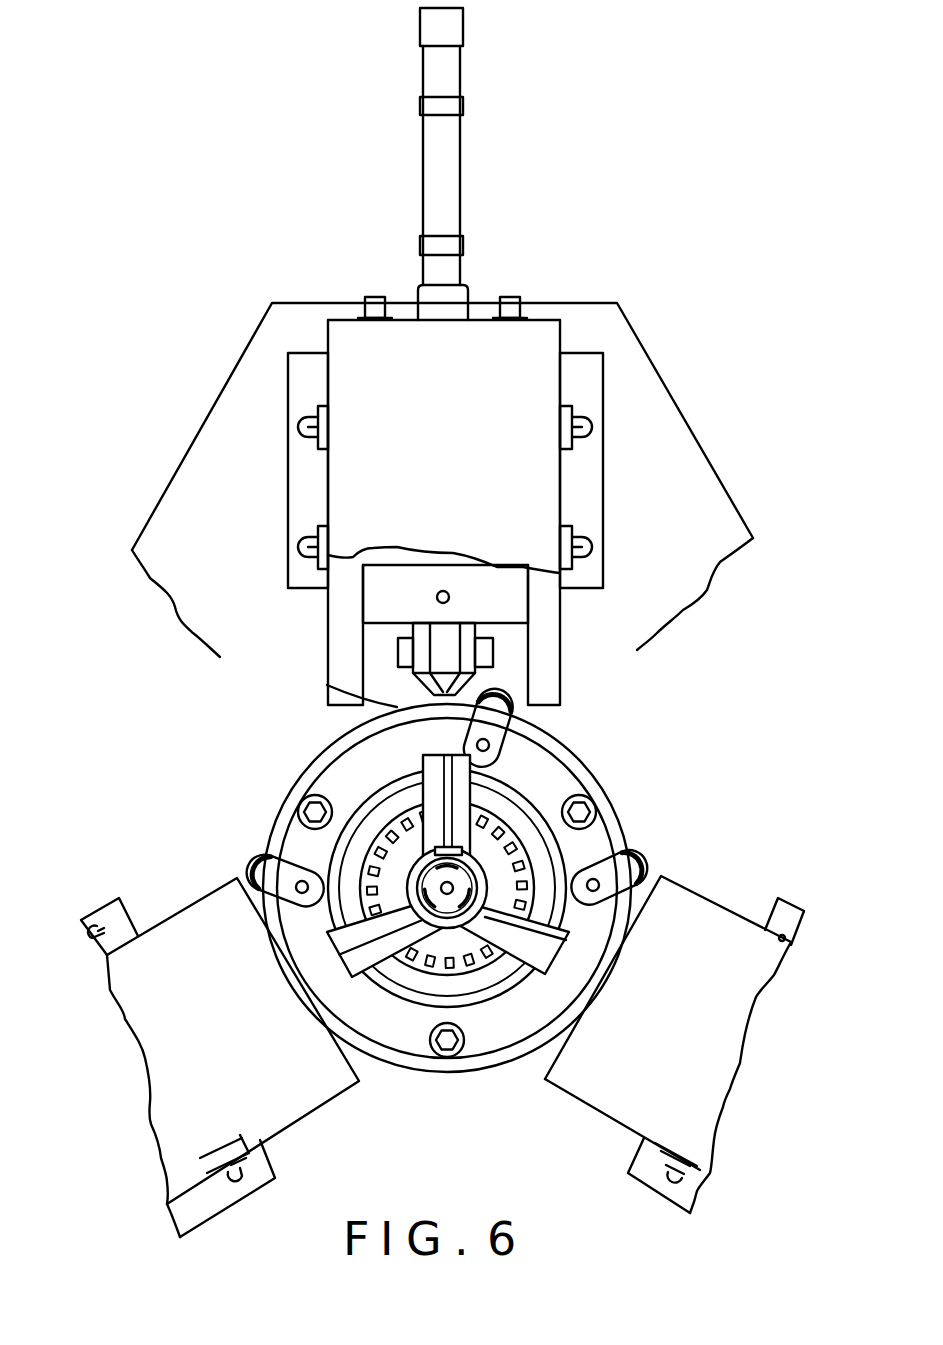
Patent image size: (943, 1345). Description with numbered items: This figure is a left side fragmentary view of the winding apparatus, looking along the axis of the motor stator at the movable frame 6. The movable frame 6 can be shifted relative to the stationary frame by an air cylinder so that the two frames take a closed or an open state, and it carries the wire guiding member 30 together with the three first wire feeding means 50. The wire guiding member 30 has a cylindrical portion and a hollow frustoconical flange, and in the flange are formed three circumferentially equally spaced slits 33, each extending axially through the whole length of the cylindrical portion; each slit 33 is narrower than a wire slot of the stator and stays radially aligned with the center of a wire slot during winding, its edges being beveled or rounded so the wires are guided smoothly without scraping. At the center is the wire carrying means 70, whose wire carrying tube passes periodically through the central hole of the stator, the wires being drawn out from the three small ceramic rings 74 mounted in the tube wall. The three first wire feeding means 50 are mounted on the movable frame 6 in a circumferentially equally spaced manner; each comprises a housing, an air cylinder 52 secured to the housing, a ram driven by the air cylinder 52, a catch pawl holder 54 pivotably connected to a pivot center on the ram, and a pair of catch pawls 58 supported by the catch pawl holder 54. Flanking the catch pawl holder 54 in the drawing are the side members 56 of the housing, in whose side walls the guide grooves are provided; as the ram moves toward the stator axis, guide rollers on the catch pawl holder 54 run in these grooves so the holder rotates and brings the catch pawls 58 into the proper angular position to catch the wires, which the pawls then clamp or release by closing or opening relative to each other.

The movable frame 6 is at (675, 477).
The wire guiding member 30 is at (517, 963).
The slits 33 is at (445, 795).
The first wire feeding means 50 is at (567, 648).
The air cylinder 52 is at (432, 163).
The catch pawl holder 54 is at (473, 590).
The guide plates 56 is at (340, 603).
The catch pawls 58 is at (453, 703).
The wire carrying means 70 is at (433, 925).
The small ceramic rings 74 is at (460, 847).